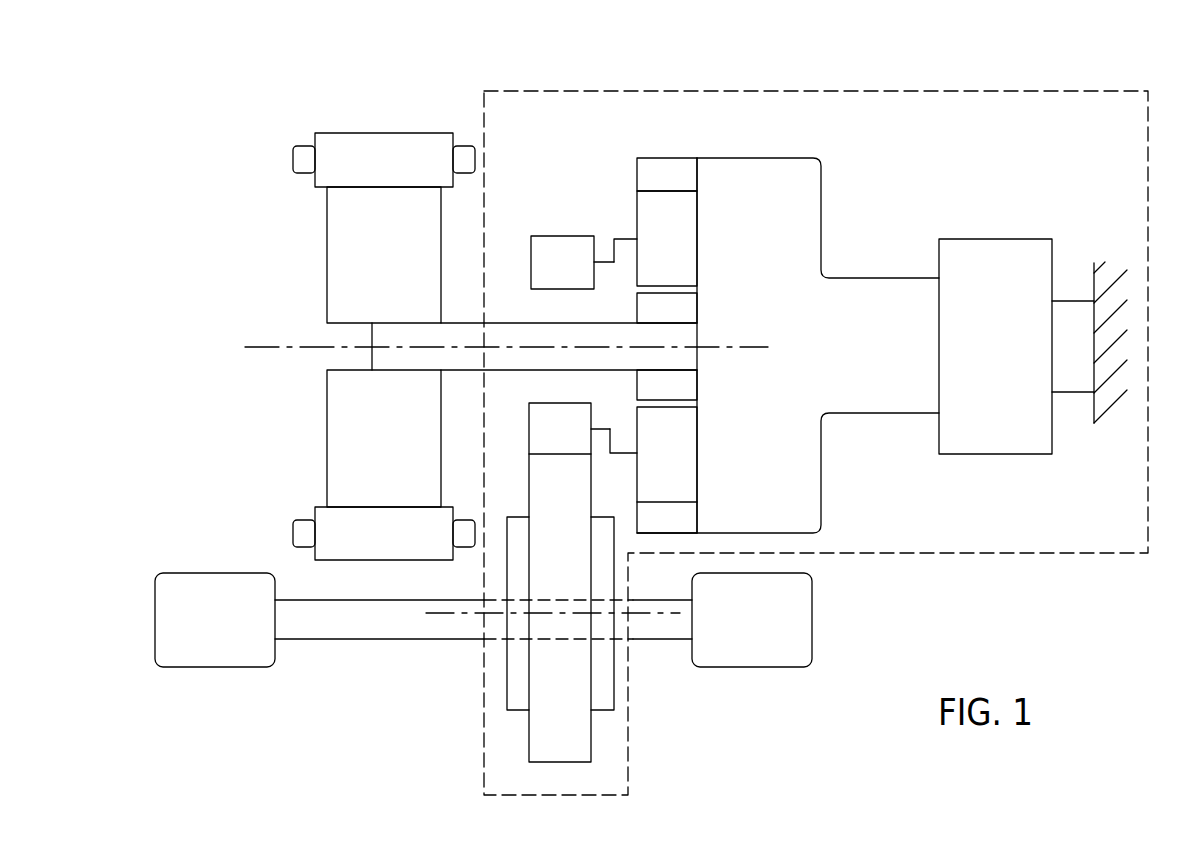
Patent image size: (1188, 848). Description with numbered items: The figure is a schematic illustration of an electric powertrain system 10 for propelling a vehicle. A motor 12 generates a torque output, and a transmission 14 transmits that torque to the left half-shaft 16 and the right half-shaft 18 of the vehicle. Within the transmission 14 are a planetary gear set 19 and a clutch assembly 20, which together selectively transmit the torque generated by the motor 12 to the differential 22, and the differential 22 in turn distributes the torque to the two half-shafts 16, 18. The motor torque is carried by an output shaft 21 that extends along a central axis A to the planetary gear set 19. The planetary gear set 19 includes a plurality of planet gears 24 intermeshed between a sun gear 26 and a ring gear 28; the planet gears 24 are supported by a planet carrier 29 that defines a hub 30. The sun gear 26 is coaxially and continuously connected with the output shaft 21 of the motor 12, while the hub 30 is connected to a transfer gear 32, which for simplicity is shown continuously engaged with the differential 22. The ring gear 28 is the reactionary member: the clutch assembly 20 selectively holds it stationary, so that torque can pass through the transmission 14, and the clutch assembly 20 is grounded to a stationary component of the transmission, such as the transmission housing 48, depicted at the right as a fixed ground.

The powertrain system 10 is at (362, 64).
The central axis A is at (277, 346).
The motor 12 is at (327, 224).
The transmission 14 is at (755, 303).
The left half-shaft 16 is at (847, 91).
The right half-shaft 18 is at (805, 622).
The planetary gear set 19 is at (701, 323).
The clutch assembly 20 is at (1030, 454).
The output shaft 21 is at (515, 323).
The differential 22 is at (585, 742).
The planet gears 24 is at (685, 237).
The sun gear 26 is at (693, 385).
The ring gear 28 is at (687, 181).
The planet carrier 29 is at (624, 239).
The hub 30 is at (607, 262).
The transfer gear 32 is at (548, 243).
The transmission housing 48 is at (1092, 423).